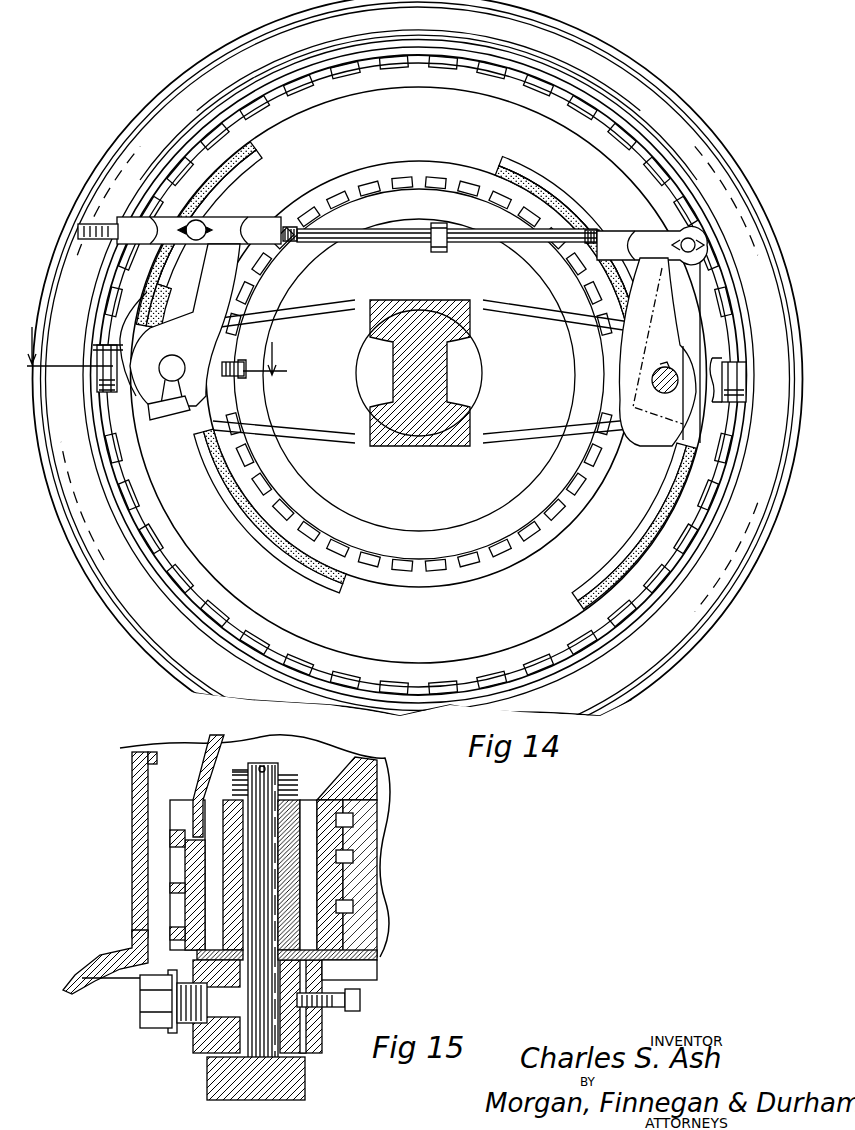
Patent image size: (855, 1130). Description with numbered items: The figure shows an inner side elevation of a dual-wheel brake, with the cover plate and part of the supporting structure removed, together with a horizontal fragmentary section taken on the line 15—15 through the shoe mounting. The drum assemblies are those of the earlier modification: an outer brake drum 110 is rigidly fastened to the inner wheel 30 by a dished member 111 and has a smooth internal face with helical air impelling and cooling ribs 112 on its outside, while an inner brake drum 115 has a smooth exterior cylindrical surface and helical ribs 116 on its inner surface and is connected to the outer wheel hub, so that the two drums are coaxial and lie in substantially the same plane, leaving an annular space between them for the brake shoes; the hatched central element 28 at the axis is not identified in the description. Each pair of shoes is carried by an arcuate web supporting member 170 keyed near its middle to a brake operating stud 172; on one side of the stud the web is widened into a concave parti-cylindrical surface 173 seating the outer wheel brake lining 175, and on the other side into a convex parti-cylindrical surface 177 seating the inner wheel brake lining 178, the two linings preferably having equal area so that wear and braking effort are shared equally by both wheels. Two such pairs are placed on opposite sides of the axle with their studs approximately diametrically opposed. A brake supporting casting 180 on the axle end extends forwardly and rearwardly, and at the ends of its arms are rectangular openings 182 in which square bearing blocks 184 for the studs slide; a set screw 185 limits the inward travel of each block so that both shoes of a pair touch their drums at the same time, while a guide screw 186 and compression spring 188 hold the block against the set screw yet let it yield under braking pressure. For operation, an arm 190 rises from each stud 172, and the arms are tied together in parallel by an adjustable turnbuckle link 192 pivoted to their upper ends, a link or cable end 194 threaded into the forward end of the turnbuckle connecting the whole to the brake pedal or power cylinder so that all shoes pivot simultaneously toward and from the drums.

In FIG. 14, the section line 15— 15 is at (160, 342).
In FIG. 14, the axle hub 28 is at (432, 379).
In FIG. 14, the inner wheel 30 is at (618, 42).
In FIG. 15, the inner wheel 30 is at (132, 803).
In FIG. 14, the outer brake drum 110 is at (400, 86).
In FIG. 15, the outer brake drum 110 is at (185, 858).
In FIG. 14, the dished member 111 is at (548, 125).
In FIG. 15, the dished member 111 is at (213, 752).
In FIG. 14, the helical air impelling and cooling ribs 112 is at (470, 56).
In FIG. 15, the helical air impelling and cooling ribs 112 is at (170, 886).
In FIG. 14, the inner brake drum 115 is at (398, 162).
In FIG. 15, the inner brake drum 115 is at (336, 847).
In FIG. 14, the helical ribs 116 is at (446, 190).
In FIG. 15, the helical ribs 116 is at (352, 908).
In FIG. 14, the arcuate web supporting member 170 is at (256, 160).
In FIG. 15, the arcuate web supporting member 170 is at (292, 876).
In FIG. 14, the brake operating stud 172 is at (180, 371).
In FIG. 15, the brake operating stud 172 is at (298, 803).
In FIG. 14, the concave parti-cylindrical surface 173 is at (230, 182).
In FIG. 14, the outer wheel brake lining 175 is at (216, 203).
In FIG. 14, the convex parti-cylindrical surface 177 is at (240, 503).
In FIG. 14, the inner wheel brake lining 178 is at (262, 533).
In FIG. 14, the brake supporting casting 180 is at (353, 515).
In FIG. 15, the rectangular opening 182 is at (196, 1050).
In FIG. 15, the square bearing block 184 is at (290, 1036).
In FIG. 14, the set screw 185 is at (238, 361).
In FIG. 15, the set screw 185 is at (360, 1000).
In FIG. 14, the guide screw 186 is at (100, 372).
In FIG. 15, the guide screw 186 is at (150, 1005).
In FIG. 15, the compression spring 188 is at (193, 1037).
In FIG. 14, the arm 190 is at (193, 290).
In FIG. 15, the arm 190 is at (210, 1082).
In FIG. 14, the adjustable turnbuckle link 192 is at (380, 245).
In FIG. 14, the link or cable end 194 is at (90, 228).